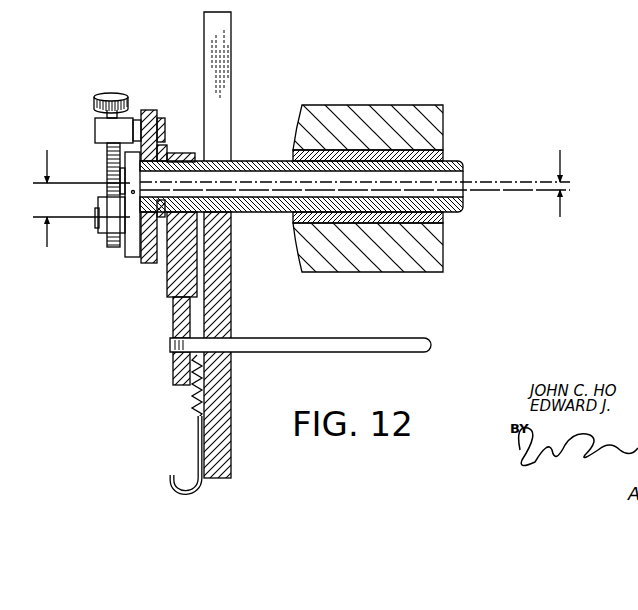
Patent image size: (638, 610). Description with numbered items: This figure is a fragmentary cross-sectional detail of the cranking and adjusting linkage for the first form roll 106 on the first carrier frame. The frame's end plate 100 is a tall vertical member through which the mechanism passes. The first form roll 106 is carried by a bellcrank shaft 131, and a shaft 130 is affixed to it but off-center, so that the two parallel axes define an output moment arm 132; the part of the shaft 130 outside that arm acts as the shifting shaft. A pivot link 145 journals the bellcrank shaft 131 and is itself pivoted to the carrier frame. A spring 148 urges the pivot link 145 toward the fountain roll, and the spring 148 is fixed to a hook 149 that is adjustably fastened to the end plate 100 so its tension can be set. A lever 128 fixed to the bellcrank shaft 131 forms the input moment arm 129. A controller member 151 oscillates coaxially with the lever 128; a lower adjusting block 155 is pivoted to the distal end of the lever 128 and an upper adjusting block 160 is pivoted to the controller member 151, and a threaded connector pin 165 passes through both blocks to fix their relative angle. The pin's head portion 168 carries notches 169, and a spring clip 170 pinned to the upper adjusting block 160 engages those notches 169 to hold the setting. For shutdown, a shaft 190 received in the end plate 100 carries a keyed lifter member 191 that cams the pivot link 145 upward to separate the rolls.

The end plate 100 is at (224, 406).
The first form roll 106 is at (392, 108).
The lever 128 is at (134, 258).
The moment arm 129 is at (80, 198).
The shaft 130 is at (242, 214).
The bellcrank shaft 131 is at (272, 170).
The output moment arm 132 is at (566, 178).
The pivot link 145 is at (176, 153).
The spring 148 is at (196, 417).
The hook 149 is at (196, 470).
The controller member 151 is at (160, 120).
The lower adjusting block 155 is at (100, 228).
The upper adjusting block 160 is at (97, 126).
The threaded connector pin 165 is at (107, 163).
The head portion 168 is at (101, 76).
The notches 169 is at (96, 104).
The spring clip 170 is at (148, 112).
The shaft 190 is at (345, 352).
The lifter member 191 is at (173, 311).